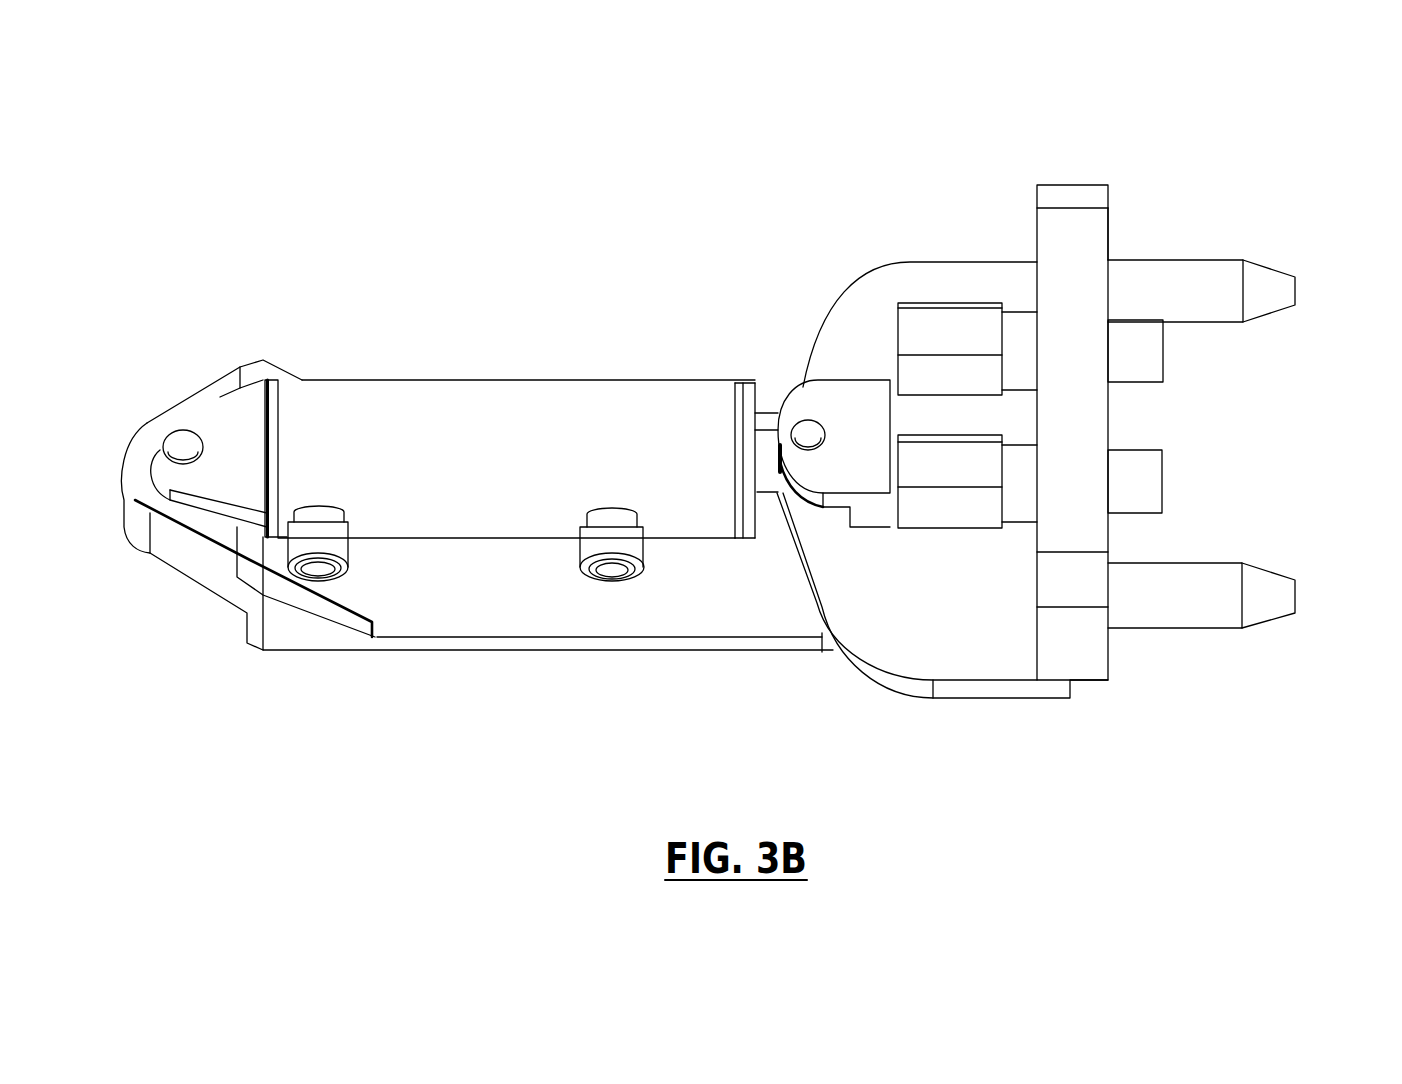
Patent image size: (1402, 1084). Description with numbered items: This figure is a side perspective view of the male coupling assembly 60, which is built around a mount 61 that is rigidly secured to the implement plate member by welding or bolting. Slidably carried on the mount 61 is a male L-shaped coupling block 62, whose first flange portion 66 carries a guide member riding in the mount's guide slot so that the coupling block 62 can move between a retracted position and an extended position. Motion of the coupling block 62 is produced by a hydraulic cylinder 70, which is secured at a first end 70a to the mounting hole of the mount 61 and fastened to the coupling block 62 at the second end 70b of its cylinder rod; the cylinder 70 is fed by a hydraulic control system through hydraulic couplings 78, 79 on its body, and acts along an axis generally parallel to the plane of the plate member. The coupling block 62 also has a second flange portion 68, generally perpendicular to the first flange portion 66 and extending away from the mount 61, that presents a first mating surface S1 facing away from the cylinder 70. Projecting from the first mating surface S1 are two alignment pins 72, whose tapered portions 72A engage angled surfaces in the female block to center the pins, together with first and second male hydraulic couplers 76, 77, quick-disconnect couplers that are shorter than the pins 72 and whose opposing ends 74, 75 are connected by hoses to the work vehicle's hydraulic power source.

The male coupling assembly 60 is at (645, 330).
The mount 61 is at (653, 622).
The male L-shaped coupling block 62 is at (982, 650).
The first flange portion 66 is at (962, 277).
The second flange portion 68 is at (1068, 220).
The hydraulic cylinder 70 is at (435, 415).
The first end of the hydraulic actuator 70a is at (170, 453).
The second end of the cylinder rod 70b is at (830, 393).
The alignment pins 72 is at (1218, 282).
The tapered portions 72A is at (1270, 287).
The opposing end of the first male hydraulic coupler 74 is at (970, 502).
The opposing end of the second male hydraulic coupler 75 is at (913, 328).
The first male hydraulic coupler 76 is at (1145, 352).
The second male hydraulic coupler 77 is at (1142, 472).
The hydraulic coupling 78 is at (595, 545).
The hydraulic coupling 79 is at (340, 545).
The first mating surface S1 is at (1113, 218).